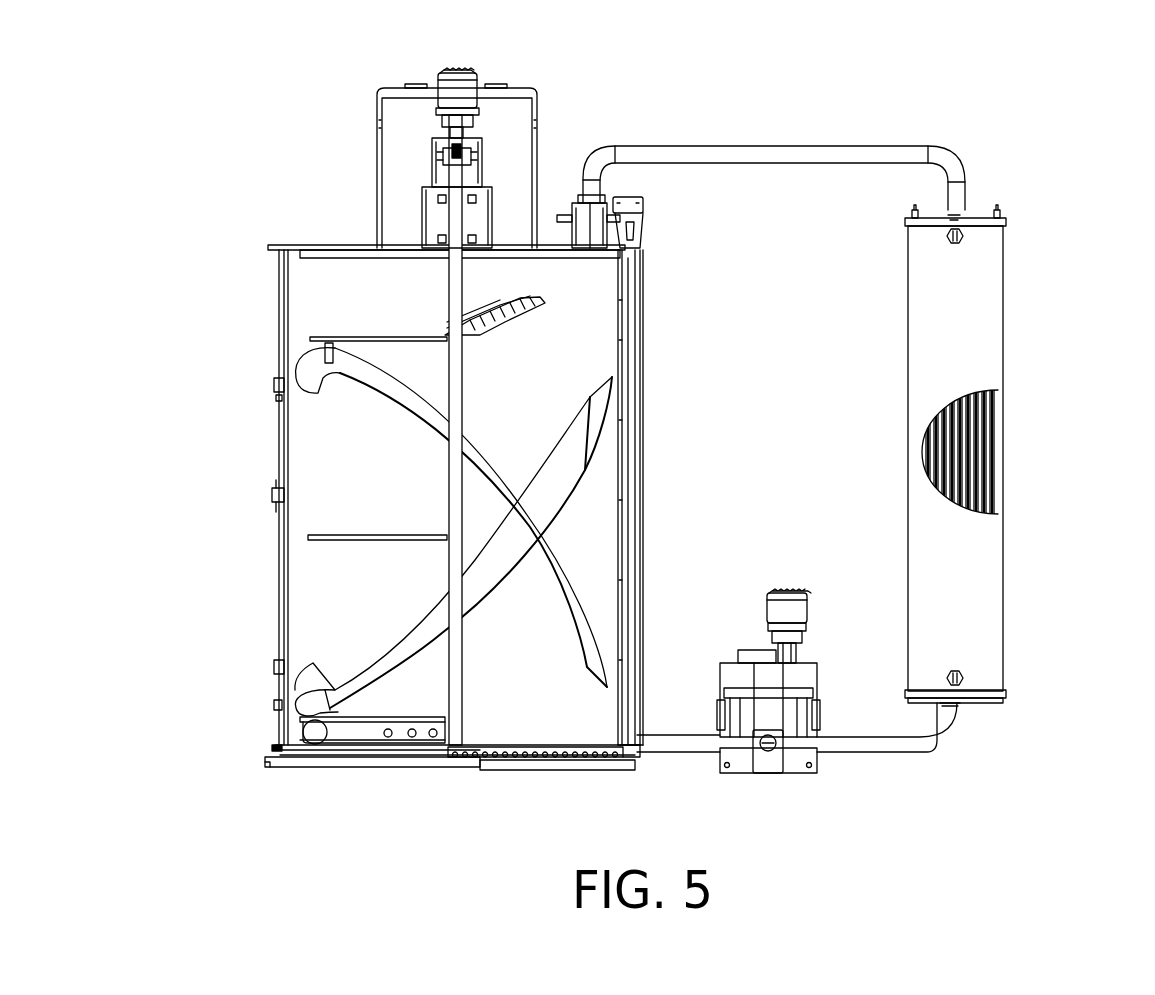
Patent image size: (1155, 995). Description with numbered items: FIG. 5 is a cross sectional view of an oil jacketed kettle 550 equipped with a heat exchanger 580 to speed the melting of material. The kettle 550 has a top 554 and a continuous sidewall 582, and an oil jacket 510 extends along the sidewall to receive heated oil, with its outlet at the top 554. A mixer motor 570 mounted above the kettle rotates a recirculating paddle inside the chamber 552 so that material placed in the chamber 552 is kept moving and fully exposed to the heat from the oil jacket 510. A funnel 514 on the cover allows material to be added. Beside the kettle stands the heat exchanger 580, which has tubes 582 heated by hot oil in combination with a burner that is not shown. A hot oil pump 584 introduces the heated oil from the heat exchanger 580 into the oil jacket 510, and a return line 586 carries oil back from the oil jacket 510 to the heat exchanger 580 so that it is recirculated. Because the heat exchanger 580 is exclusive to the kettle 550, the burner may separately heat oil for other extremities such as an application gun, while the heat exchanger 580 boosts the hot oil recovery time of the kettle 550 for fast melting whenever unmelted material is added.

The kettle 550 is at (330, 197).
The top 554 is at (310, 290).
The tubes 582 is at (278, 495).
The chamber 552 is at (598, 316).
The funnel 514 is at (545, 135).
The mixer motor 570 is at (480, 82).
The return line 586 is at (780, 142).
The heat exchanger 580 is at (1025, 216).
The hot oil pump 584 is at (780, 765).
The oil jacket 510 is at (605, 765).